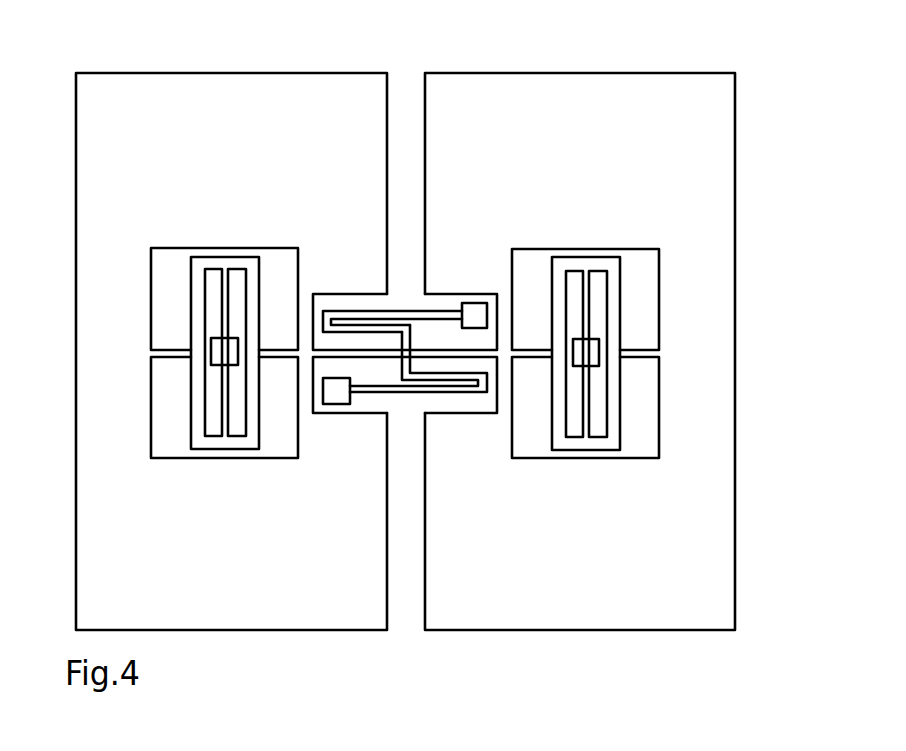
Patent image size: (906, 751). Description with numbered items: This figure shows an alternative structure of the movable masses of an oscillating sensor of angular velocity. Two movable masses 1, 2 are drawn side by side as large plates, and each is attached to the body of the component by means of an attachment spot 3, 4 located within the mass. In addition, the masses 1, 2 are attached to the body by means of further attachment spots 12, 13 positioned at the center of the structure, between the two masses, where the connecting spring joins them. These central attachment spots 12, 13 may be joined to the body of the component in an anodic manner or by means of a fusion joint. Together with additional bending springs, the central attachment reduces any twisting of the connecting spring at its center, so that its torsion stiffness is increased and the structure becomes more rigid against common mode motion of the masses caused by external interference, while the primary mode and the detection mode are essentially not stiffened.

The mass 1 is at (303, 78).
The mass 2 is at (736, 188).
The attachment spot 3 is at (223, 348).
The attachment spot 4 is at (592, 352).
The attachment spot 12 is at (333, 390).
The attachment spot 13 is at (474, 316).